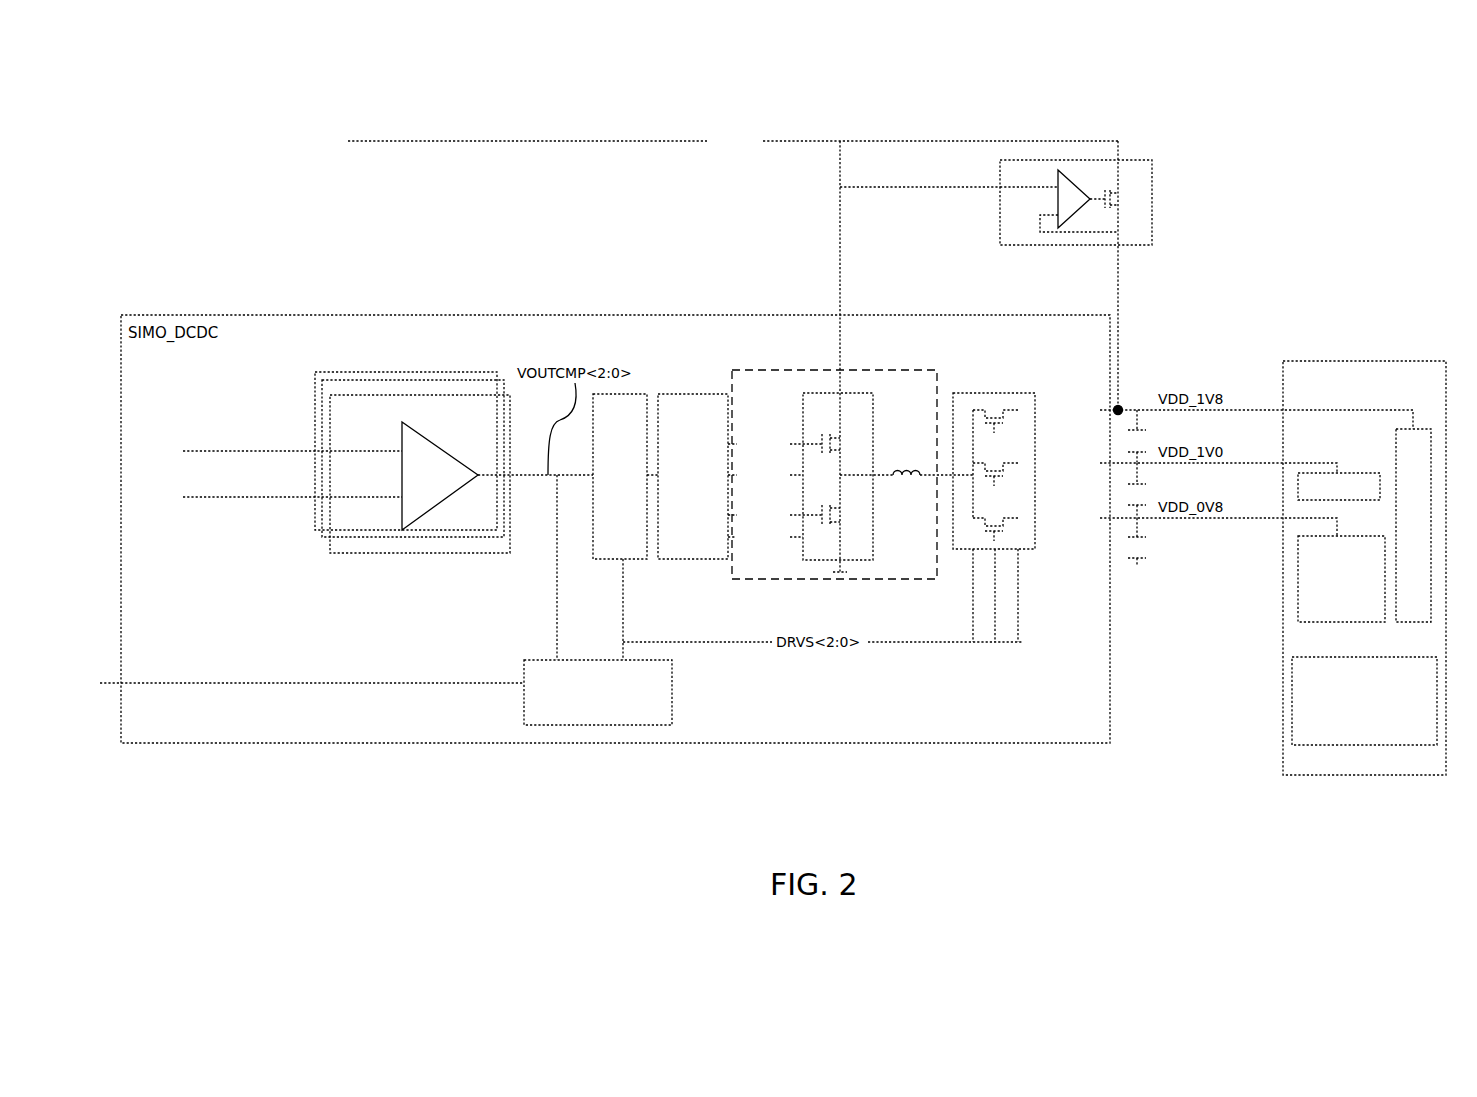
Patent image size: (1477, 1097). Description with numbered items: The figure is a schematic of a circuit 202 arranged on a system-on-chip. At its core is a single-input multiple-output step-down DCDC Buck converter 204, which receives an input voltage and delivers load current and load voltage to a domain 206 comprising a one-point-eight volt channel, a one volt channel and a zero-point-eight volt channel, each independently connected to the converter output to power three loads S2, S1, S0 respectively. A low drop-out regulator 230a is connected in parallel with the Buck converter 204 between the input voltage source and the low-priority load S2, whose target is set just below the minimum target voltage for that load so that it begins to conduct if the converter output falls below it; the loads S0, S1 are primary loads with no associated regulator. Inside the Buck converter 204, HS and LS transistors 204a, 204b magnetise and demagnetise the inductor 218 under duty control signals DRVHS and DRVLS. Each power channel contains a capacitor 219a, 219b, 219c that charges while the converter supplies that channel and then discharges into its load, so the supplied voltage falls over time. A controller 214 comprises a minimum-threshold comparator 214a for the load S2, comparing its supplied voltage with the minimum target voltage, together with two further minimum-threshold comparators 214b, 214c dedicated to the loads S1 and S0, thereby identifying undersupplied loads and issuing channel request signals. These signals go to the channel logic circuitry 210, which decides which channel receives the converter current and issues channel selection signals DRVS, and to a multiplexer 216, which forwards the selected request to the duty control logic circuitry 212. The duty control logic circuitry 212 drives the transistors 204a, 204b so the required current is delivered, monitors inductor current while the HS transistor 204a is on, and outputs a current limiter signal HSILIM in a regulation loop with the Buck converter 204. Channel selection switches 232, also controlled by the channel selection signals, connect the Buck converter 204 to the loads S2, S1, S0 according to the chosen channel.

The circuit 202 is at (207, 97).
The Buck converter 204 is at (833, 367).
The HS transistor 204a is at (820, 437).
The LS transistor 204b is at (826, 514).
The domain 206 is at (1386, 402).
The channel logic circuitry 210 is at (548, 660).
The duty control logic circuitry 212 is at (692, 394).
The controller 214 is at (305, 533).
The minimum-threshold comparator 214a is at (355, 530).
The minimum-threshold comparator 214b is at (467, 388).
The minimum-threshold comparator 214c is at (315, 391).
The multiplexer 216 is at (637, 559).
The inductor 218 is at (907, 470).
The capacitor 219a is at (1137, 430).
The capacitor 219b is at (1137, 484).
The capacitor 219c is at (1140, 537).
The low drop-out regulator 230a is at (1152, 183).
The channel selection switches 232 is at (955, 558).
The load S0 is at (1298, 612).
The load S1 is at (1298, 488).
The load S2 is at (1420, 429).